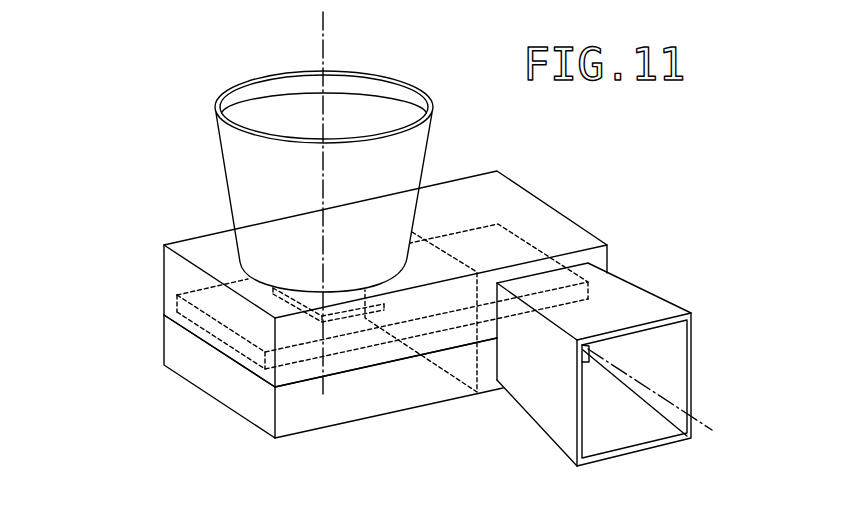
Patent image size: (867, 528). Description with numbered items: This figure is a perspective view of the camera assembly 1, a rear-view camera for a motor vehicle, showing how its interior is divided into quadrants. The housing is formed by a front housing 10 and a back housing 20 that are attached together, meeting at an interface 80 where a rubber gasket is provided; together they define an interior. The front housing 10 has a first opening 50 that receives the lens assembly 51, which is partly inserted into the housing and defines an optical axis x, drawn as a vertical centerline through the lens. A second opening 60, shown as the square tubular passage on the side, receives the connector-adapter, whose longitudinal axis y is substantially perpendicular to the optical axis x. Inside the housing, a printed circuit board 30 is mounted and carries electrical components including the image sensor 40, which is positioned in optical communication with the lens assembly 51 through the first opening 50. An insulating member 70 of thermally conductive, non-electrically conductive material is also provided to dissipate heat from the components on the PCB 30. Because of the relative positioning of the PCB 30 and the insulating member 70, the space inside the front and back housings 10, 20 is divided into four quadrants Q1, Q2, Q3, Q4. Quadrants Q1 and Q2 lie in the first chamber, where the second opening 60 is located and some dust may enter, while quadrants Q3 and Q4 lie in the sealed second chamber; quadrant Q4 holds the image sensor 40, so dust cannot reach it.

The camera assembly 1 is at (662, 212).
The front housing 10 is at (608, 261).
The back housing 20 is at (302, 422).
The printed circuit board 30 is at (170, 296).
The image sensor 40 is at (343, 313).
The first opening 50 is at (218, 99).
The lens assembly 51 is at (367, 100).
The second opening 60 is at (677, 360).
The insulating member 70 is at (430, 266).
The interface 80 is at (193, 333).
The first quadrant Q1 is at (487, 380).
The second quadrant Q2 is at (511, 200).
The third quadrant Q3 is at (213, 383).
The fourth quadrant Q4 is at (192, 246).
The optical axis x is at (323, 50).
The longitudinal axis y is at (703, 430).